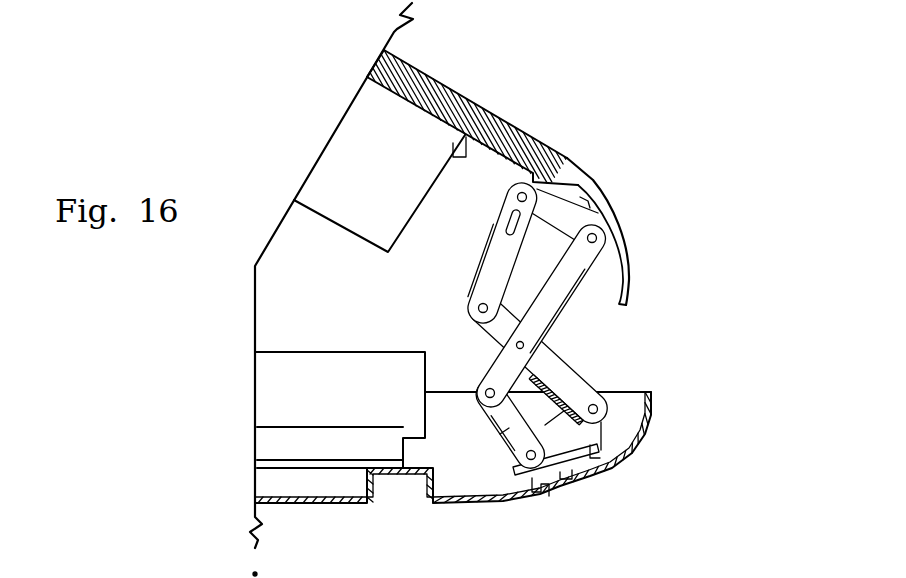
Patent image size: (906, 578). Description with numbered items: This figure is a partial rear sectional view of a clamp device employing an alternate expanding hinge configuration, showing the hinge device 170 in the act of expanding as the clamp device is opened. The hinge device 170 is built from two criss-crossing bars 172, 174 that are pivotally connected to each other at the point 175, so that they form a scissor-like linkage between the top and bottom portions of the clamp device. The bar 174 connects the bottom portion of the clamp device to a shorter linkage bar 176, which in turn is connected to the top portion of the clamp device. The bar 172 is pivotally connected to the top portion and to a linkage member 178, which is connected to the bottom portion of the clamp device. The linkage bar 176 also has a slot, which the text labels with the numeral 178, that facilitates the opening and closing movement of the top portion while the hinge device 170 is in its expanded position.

The hinge device 170 is at (708, 249).
The bar 172 is at (556, 301).
The bar 174 is at (567, 379).
The point 175 is at (512, 346).
The linkage bar 176 is at (488, 268).
The linkage member 178 is at (520, 236).